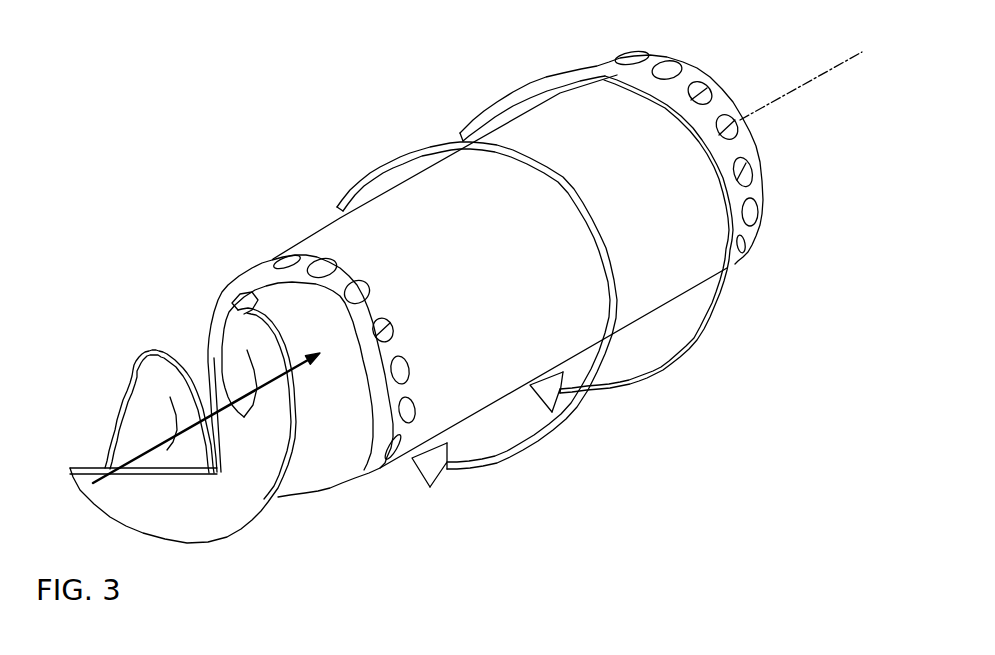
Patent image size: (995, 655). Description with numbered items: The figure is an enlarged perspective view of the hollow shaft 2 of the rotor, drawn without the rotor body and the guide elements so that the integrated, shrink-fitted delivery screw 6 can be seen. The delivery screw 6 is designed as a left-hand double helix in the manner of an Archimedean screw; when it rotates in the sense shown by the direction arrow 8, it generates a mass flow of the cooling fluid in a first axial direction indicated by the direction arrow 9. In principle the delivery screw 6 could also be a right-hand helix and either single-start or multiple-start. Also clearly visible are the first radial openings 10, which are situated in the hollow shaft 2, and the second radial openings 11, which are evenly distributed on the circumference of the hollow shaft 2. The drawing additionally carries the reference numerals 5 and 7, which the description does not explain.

The hollow shaft 2 is at (326, 241).
The helical screw blade 5 is at (273, 303).
The delivery screw 6 is at (322, 447).
The axis of rotation 7 is at (823, 73).
The direction arrow 8 is at (408, 155).
The direction arrow 9 is at (140, 457).
The first radial openings 10 is at (667, 68).
The second radial openings 11 is at (357, 292).